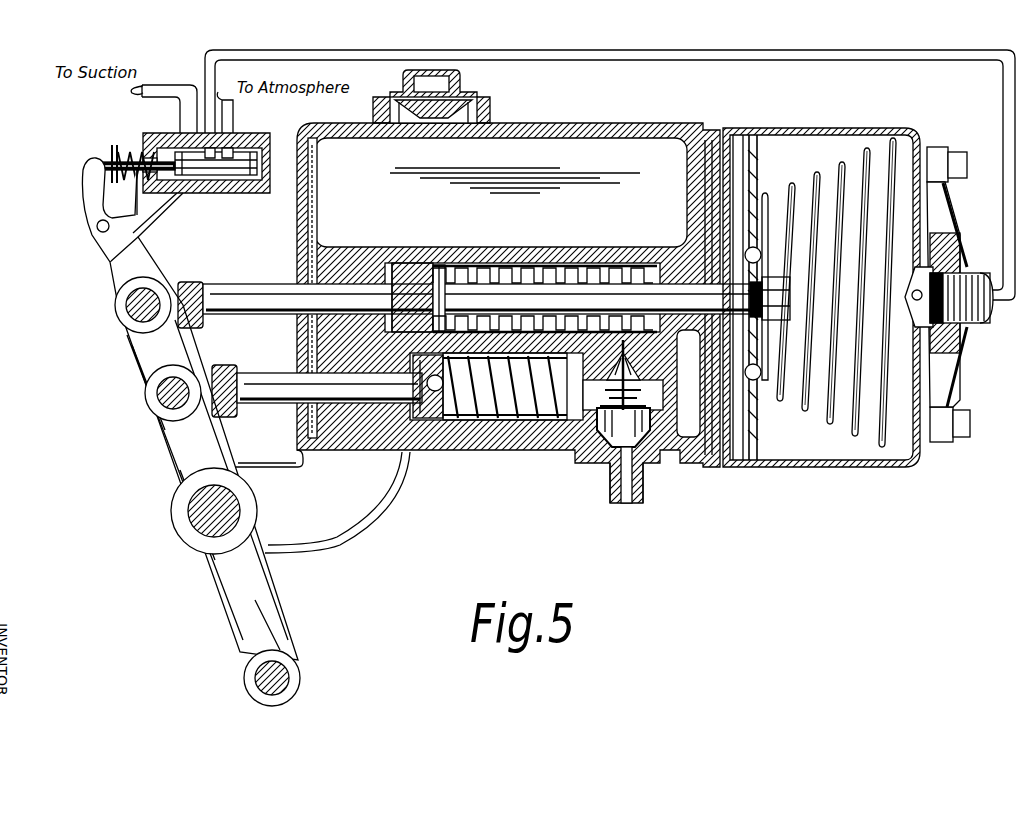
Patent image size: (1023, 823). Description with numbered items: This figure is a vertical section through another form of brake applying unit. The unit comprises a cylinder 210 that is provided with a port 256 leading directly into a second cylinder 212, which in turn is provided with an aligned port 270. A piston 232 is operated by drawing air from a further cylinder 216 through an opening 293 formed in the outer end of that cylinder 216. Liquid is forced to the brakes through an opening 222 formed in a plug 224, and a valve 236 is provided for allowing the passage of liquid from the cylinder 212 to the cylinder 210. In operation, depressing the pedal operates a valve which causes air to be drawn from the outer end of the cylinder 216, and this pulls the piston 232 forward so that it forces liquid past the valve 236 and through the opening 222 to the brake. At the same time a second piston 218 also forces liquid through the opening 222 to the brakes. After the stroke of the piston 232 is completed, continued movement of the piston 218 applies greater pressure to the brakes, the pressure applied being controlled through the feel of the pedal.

The cylinder 210 is at (497, 415).
The cylinder 212 is at (543, 262).
The cylinder 216 is at (803, 153).
The piston 218 is at (402, 455).
The opening 222 is at (625, 505).
The plug 224 is at (657, 477).
The piston 232 is at (387, 262).
The valve 236 is at (580, 412).
The port 256 is at (457, 410).
The port 270 is at (440, 262).
The opening 293 is at (967, 332).